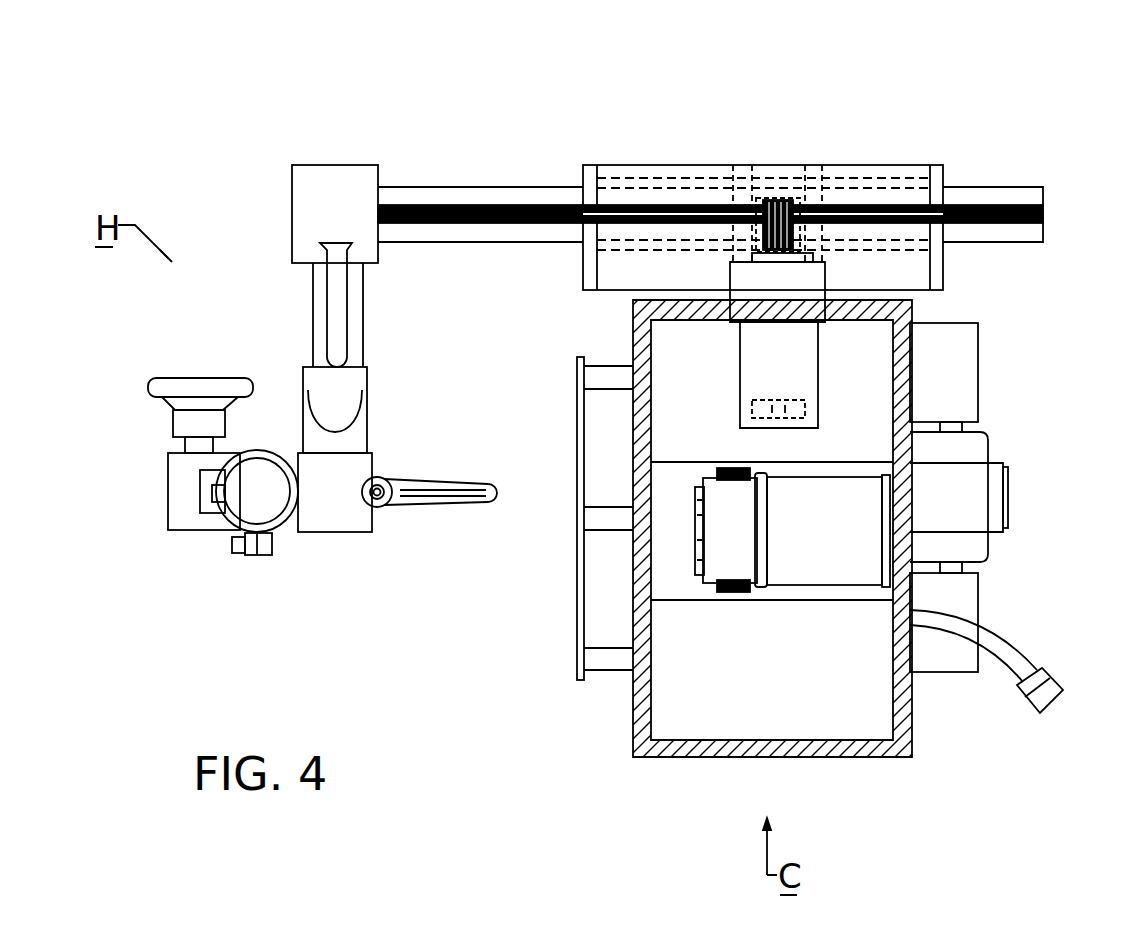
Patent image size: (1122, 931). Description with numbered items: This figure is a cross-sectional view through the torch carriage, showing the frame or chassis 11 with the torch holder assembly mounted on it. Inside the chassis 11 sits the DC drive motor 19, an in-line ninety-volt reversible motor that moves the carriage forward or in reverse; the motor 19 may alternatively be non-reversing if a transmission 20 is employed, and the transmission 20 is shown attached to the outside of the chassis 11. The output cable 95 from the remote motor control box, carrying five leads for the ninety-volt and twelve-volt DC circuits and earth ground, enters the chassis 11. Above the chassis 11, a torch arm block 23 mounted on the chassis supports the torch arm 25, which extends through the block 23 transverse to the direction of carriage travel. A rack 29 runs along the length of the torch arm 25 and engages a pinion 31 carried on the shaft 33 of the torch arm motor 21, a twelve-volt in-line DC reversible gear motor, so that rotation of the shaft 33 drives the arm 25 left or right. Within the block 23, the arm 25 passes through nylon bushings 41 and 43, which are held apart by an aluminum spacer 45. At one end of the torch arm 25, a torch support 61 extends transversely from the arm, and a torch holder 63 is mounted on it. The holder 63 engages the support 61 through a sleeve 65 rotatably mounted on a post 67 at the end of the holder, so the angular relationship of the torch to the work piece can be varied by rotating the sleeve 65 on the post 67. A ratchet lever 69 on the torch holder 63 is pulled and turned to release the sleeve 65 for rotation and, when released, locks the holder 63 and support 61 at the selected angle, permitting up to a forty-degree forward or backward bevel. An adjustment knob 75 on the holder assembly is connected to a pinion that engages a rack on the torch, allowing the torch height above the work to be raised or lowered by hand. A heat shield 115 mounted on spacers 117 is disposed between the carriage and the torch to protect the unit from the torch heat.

The frame or chassis 11 is at (687, 760).
The DC drive motor 19 is at (828, 562).
The transmission 20 is at (990, 485).
The torch arm motor 21 is at (752, 362).
The torch arm block 23 is at (682, 167).
The torch arm 25 is at (470, 192).
The rack 29 is at (1022, 202).
The pinion 31 is at (782, 205).
The shaft 33 is at (757, 202).
The nylon bushing 41 is at (700, 252).
The nylon bushing 43 is at (857, 250).
The aluminum spacer 45 is at (763, 178).
The torch support 61 is at (293, 252).
The torch holder 63 is at (273, 537).
The sleeve 65 is at (363, 462).
The post 67 is at (335, 535).
The ratchet lever 69 is at (443, 487).
The adjustment knob 75 is at (202, 380).
The output cable 95 is at (1013, 650).
The heat shield 115 is at (578, 578).
The spacers 117 is at (603, 370).